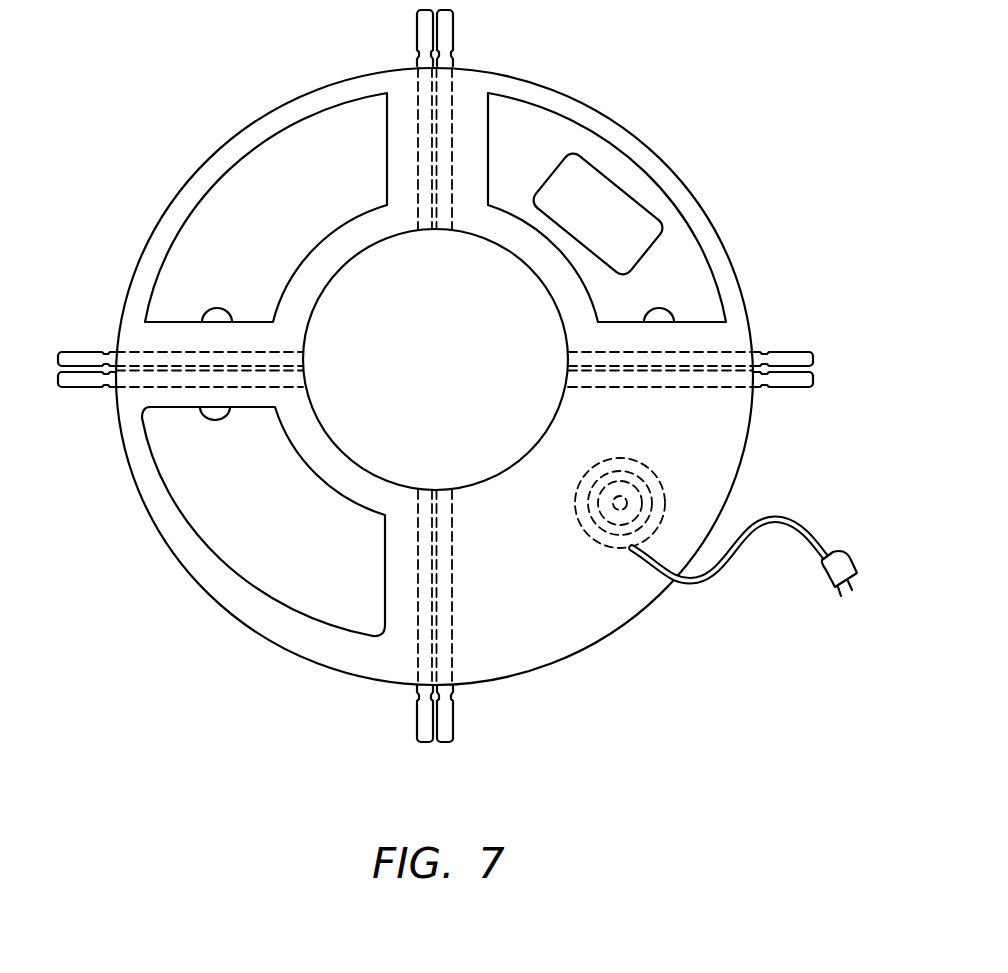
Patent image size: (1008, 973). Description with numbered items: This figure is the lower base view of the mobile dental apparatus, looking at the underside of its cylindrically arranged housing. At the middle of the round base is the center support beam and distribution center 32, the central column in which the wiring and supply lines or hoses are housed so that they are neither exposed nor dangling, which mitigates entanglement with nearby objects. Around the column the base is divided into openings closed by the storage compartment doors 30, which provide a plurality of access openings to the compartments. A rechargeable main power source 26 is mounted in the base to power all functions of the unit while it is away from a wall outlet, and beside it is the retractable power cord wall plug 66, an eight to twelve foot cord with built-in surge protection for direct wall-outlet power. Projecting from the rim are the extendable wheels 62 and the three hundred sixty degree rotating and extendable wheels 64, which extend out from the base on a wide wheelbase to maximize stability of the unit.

The rechargeable main power source 26 is at (612, 200).
The storage compartment doors 30 is at (210, 318).
The center support beam and distribution center 32 is at (448, 369).
The extendable wheels 62 is at (421, 58).
The 360 degree rotating and extendable wheels 64 is at (423, 723).
The retractable power cord wall plug 66 is at (807, 523).